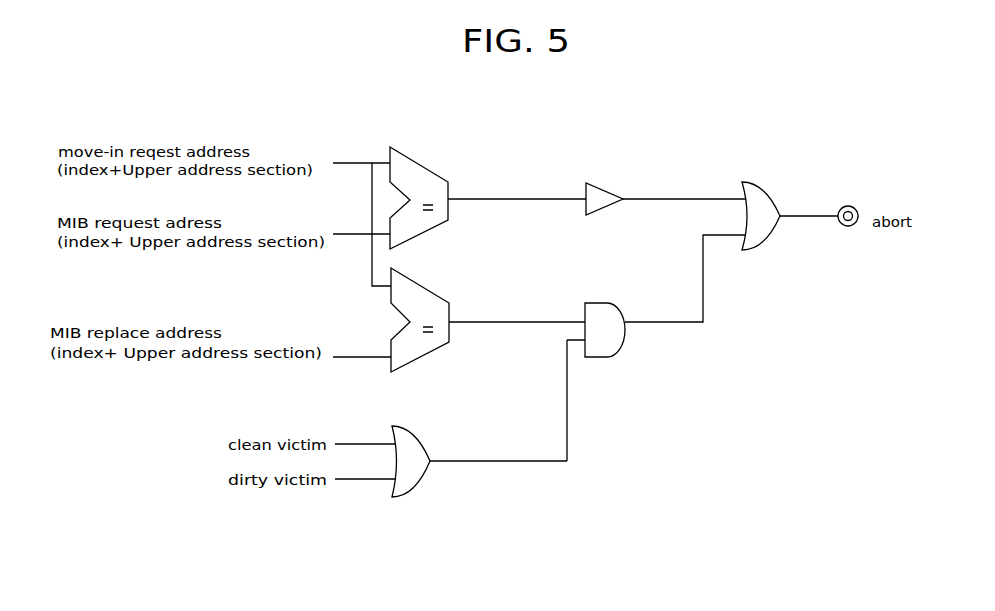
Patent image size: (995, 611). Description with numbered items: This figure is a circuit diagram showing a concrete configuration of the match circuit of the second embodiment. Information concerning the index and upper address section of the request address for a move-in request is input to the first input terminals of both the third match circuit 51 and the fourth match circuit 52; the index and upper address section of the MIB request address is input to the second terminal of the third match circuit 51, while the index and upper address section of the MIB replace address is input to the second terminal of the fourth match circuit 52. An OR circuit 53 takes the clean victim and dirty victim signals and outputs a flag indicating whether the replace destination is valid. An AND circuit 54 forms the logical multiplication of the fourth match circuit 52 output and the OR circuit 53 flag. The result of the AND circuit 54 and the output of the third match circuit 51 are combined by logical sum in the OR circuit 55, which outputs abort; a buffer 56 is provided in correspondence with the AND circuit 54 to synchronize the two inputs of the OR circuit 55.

The third match circuit 51 is at (427, 162).
The fourth match circuit 52 is at (437, 293).
The OR circuit 53 is at (427, 445).
The AND circuit 54 is at (608, 303).
The OR circuit 55 is at (775, 198).
The buffer 56 is at (610, 192).